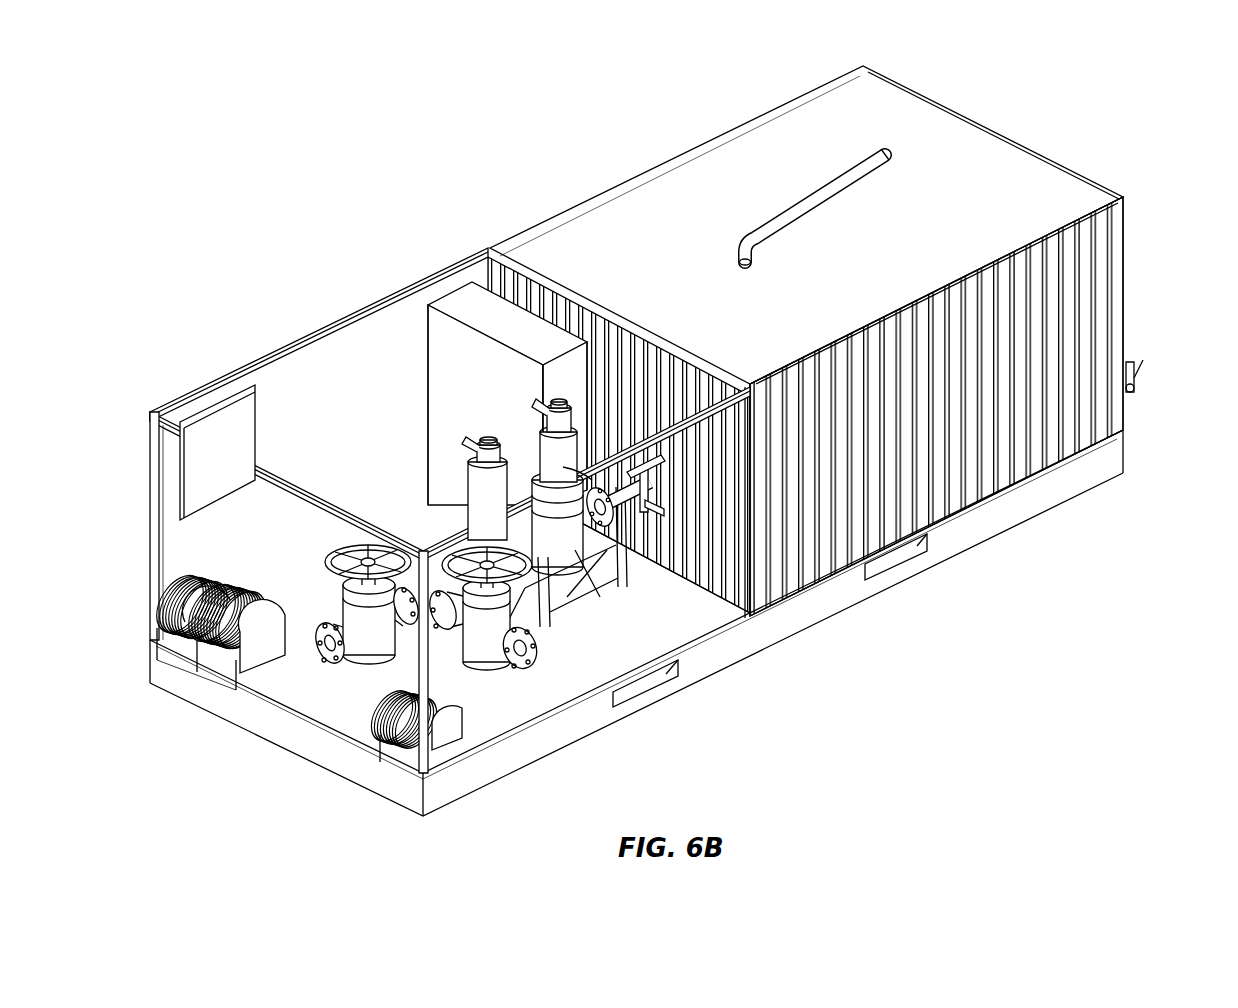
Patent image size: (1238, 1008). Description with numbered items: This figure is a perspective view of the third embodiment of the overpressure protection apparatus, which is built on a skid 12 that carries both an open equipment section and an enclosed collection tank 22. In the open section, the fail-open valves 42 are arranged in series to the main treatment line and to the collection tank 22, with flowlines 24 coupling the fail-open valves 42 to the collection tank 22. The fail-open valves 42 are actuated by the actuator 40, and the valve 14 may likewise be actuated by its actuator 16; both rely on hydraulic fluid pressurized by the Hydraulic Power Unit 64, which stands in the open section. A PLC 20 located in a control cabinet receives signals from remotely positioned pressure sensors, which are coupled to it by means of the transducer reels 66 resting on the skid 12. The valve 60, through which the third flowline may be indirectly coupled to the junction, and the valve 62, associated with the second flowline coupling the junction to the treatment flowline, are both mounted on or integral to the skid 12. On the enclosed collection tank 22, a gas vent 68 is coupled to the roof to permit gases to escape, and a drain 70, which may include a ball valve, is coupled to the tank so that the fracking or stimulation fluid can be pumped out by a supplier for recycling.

The skid 12 is at (950, 543).
The valve 14 is at (568, 542).
The actuator 16 is at (636, 518).
The PLC 20 is at (217, 452).
The collection tank 22 is at (983, 462).
The flowline 24 is at (655, 512).
The actuator 40 is at (473, 488).
The fail-open valve 42 is at (465, 528).
The valve 60 is at (530, 662).
The valve 62 is at (362, 653).
The Hydraulic Power Unit 64 is at (436, 389).
The transducer reel 66 is at (378, 742).
The gas vent 68 is at (818, 195).
The drain 70 is at (1136, 392).